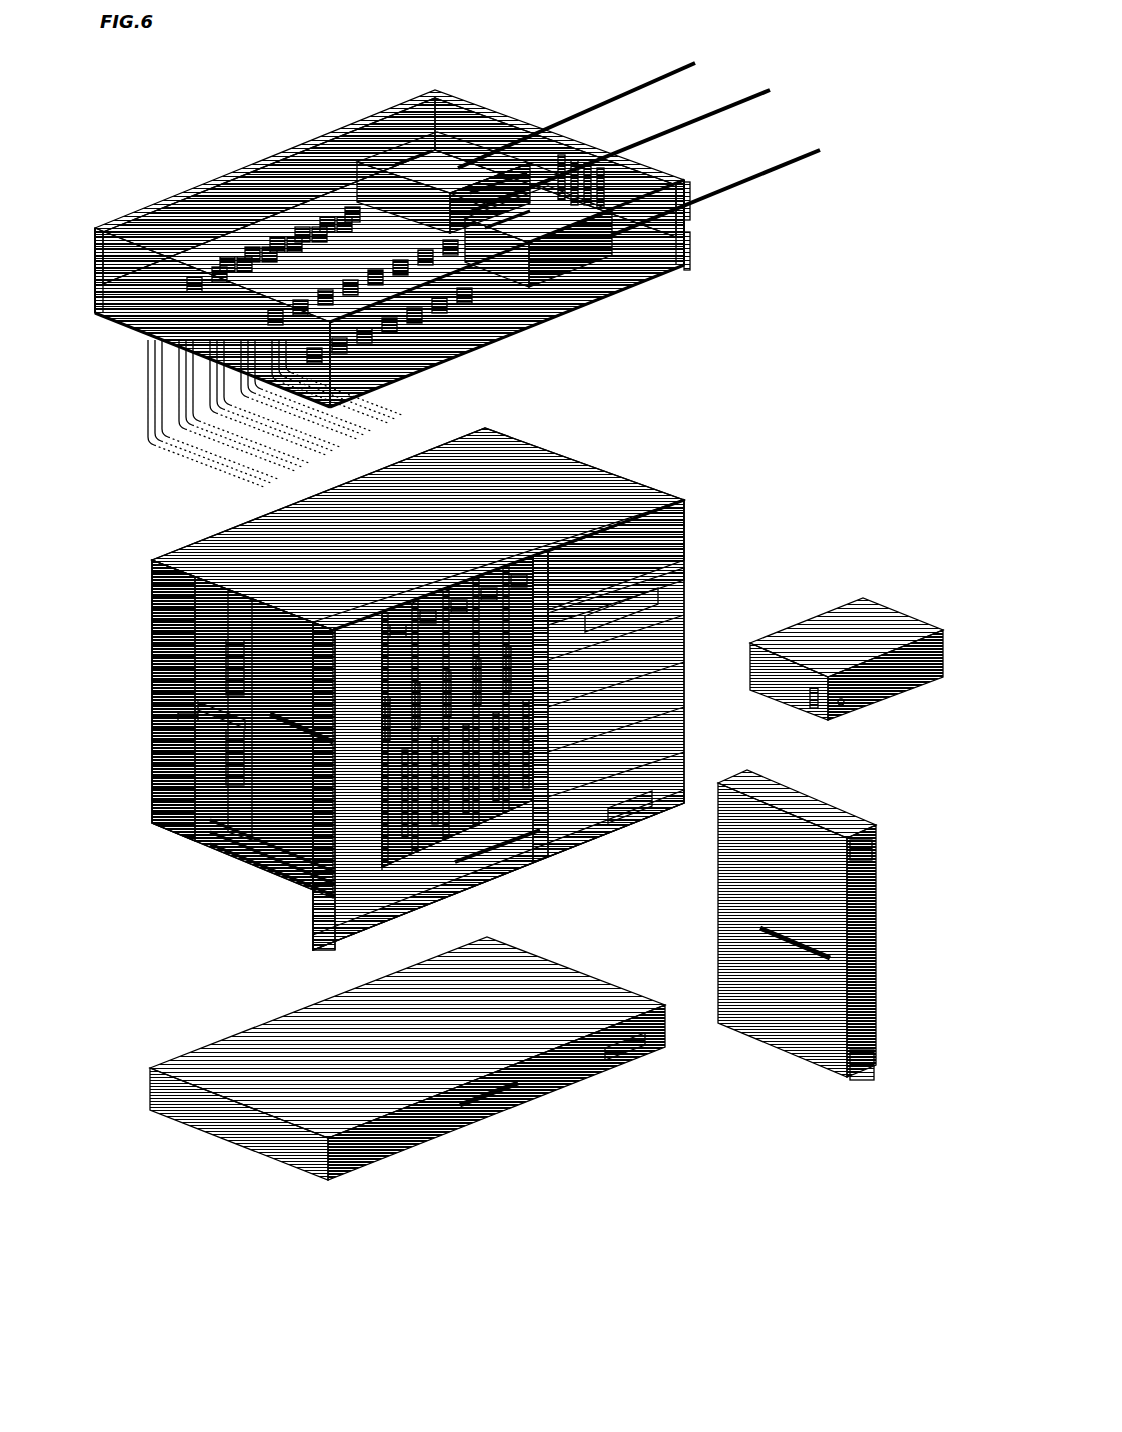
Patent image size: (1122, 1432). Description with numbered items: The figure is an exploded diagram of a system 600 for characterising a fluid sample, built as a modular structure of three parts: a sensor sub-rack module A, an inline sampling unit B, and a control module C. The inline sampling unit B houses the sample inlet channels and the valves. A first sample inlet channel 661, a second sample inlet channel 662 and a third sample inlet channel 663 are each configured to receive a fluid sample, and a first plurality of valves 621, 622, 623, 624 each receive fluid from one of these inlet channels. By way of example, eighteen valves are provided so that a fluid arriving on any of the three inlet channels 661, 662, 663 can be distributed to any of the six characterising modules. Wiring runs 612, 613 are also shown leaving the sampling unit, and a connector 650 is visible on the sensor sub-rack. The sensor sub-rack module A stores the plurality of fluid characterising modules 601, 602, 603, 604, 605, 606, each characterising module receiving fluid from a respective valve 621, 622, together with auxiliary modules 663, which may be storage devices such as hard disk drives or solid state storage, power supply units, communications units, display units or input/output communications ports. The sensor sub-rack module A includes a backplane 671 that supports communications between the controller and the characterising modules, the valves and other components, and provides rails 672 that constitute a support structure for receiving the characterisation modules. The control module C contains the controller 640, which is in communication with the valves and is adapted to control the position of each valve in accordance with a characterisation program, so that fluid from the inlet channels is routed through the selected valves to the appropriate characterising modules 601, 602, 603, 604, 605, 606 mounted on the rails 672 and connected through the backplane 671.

The system 600 is at (486, 697).
The fluid characterising module 601 is at (398, 862).
The fluid characterising module 602 is at (432, 848).
The fluid characterising module 603 is at (466, 833).
The fluid characterising module 604 is at (496, 822).
The fluid characterising module 605 is at (531, 817).
The fluid characterising module 606 is at (690, 898).
The power wires 612 is at (135, 397).
The signal wires 613 is at (140, 420).
The valve 621 is at (92, 243).
The valve 622 is at (92, 283).
The valve 623 is at (92, 317).
The valve 624 is at (97, 355).
The controller 640 is at (555, 1123).
The connector 650 is at (165, 742).
The first sample inlet channel 661 is at (490, 131).
The second sample inlet channel 662 is at (548, 149).
The third sample inlet channel 663 is at (615, 193).
The backplane 671 is at (180, 815).
The rails 672 is at (252, 870).
The sensor sub-rack module A is at (440, 664).
The inline sampling unit B is at (486, 391).
The control module C is at (407, 1125).